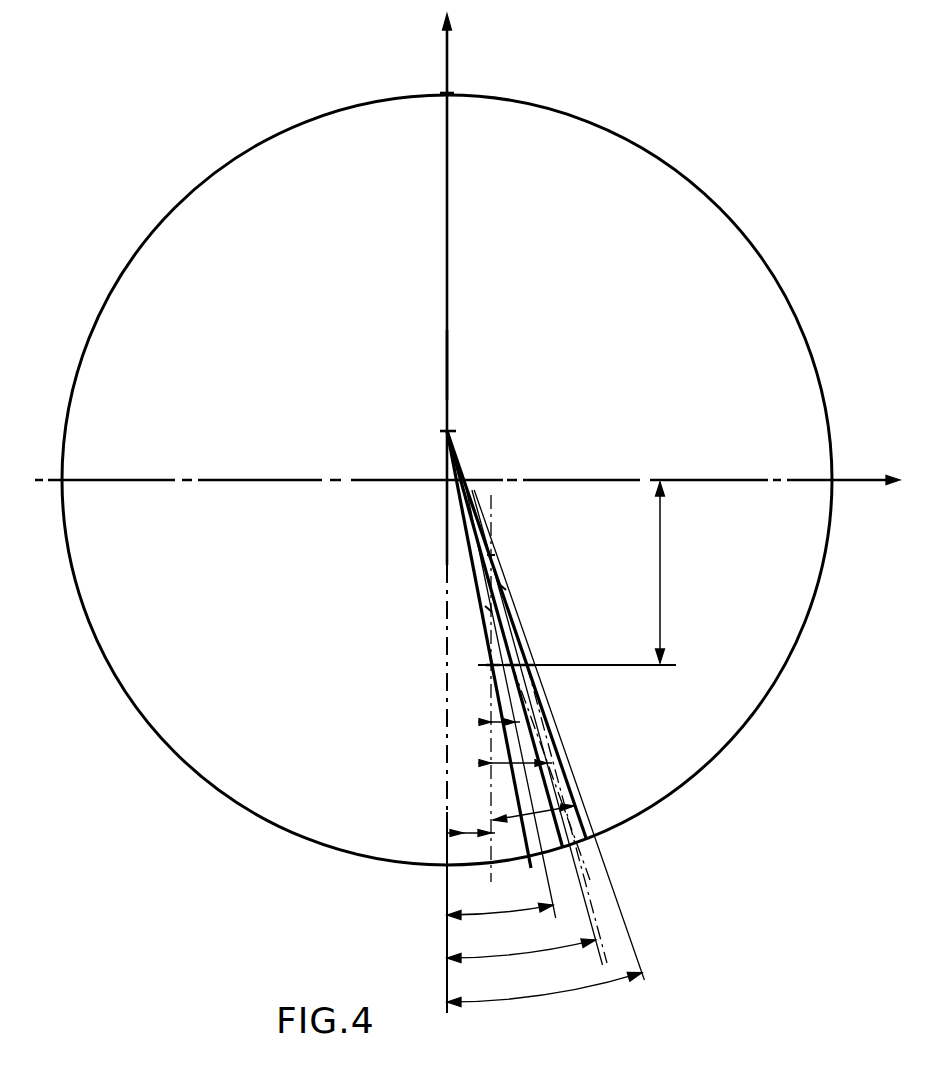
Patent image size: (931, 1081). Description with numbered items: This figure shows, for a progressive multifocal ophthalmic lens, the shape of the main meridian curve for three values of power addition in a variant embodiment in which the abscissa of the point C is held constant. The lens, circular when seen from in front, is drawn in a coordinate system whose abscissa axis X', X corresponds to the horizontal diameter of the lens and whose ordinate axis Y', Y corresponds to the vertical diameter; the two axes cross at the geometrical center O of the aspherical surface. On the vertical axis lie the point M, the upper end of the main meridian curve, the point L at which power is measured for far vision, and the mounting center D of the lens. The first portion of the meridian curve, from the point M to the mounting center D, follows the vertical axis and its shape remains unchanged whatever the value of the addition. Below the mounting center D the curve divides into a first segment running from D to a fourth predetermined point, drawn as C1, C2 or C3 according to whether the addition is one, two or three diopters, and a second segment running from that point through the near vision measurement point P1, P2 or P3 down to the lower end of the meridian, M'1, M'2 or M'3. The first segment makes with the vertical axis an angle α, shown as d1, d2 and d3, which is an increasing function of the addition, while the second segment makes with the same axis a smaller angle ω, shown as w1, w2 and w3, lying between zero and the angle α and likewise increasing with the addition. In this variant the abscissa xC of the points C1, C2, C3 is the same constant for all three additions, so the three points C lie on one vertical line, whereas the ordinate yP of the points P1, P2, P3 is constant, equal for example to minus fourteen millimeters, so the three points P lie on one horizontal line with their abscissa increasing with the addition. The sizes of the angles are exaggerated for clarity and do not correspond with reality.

The upper end point of main meridian curve M is at (465, 68).
The far vision power measurement point L is at (447, 378).
The mounting center D is at (449, 431).
The geometrical center O is at (447, 480).
The fourth predetermined point (one diopter) C1 is at (490, 612).
The fourth predetermined point (two diopters) C2 is at (504, 586).
The fourth predetermined point (three diopters) C3 is at (493, 556).
The near vision power measurement point (one diopter) P1 is at (488, 660).
The near vision power measurement point (two diopters) P2 is at (514, 660).
The near vision power measurement point (three diopters) P3 is at (530, 667).
The angle ω (one diopter) w1 is at (490, 720).
The angle ω (two diopters) w2 is at (490, 762).
The angle ω (three diopters) w3 is at (574, 806).
The lower end point of main meridian curve (one diopter) M'1 is at (490, 668).
The lower end point of main meridian curve (two diopters) M'2 is at (563, 666).
The lower end point of main meridian curve (three diopters) M'3 is at (573, 646).
The angle α (one diopter) d1 is at (490, 918).
The angle α (two diopters) d2 is at (530, 958).
The angle α (three diopters) d3 is at (570, 997).
The abscissa of point C xC is at (460, 830).
The ordinate of point P yP is at (806, 553).
The abscissa axis end X is at (467, 502).
The abscissa axis end X' is at (46, 507).
The ordinate axis end Y is at (430, 513).
The ordinate axis end Y' is at (427, 986).